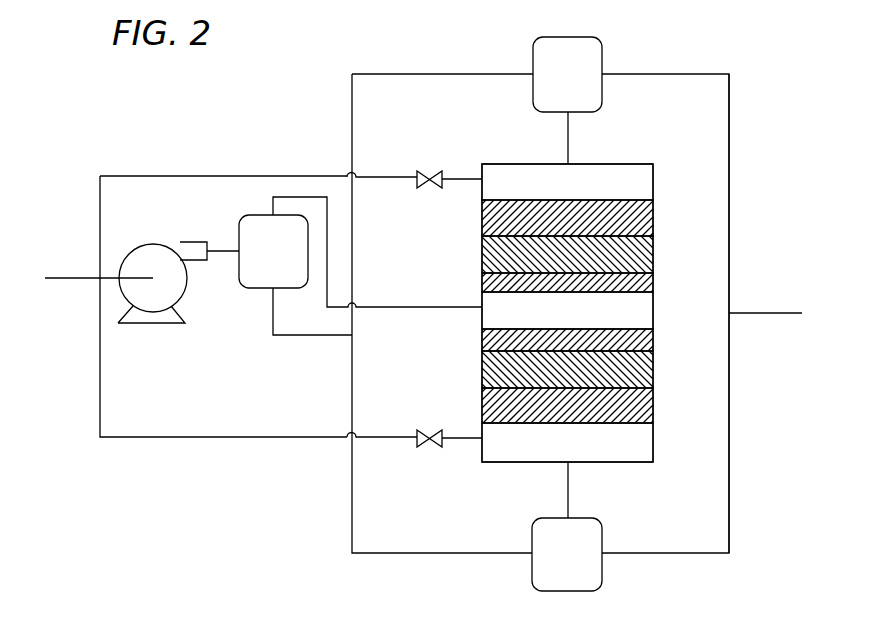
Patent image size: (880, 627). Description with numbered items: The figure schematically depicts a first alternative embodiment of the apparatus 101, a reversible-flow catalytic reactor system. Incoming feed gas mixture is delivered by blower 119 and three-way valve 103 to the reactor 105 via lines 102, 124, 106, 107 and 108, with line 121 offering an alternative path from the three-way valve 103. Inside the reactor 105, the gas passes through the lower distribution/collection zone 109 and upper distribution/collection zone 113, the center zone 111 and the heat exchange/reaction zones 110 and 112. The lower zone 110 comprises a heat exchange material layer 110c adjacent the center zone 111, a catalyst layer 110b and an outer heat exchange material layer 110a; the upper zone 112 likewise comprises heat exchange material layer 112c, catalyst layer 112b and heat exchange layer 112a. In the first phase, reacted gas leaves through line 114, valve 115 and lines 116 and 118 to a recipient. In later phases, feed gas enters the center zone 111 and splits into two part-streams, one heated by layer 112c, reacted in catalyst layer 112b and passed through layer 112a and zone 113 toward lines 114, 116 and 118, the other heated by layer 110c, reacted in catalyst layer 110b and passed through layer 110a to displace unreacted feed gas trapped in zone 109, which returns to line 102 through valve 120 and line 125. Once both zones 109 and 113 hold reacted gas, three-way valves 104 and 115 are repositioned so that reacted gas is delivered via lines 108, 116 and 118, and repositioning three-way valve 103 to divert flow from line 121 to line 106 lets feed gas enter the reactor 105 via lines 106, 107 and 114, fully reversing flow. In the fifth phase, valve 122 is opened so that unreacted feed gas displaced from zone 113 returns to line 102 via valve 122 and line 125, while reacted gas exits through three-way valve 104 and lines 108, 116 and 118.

The gas separation system 101 is at (256, 112).
The line 102 is at (75, 278).
The three-way valve 103 is at (246, 214).
The three-way valve 104 is at (602, 545).
The reactor 105 is at (507, 463).
The line 106 is at (307, 336).
The line 107 is at (352, 138).
The line 108 is at (568, 488).
The distribution/collection zone 109 is at (643, 443).
The heat exchange/reaction zone 110 is at (643, 372).
The heat exchange material layer 110a is at (482, 413).
The catalyst layer 110b is at (482, 372).
The heat exchange material layer 110c is at (482, 340).
The center zone 111 is at (647, 312).
The heat exchange/reaction zone 112 is at (647, 260).
The heat exchange layer 112a is at (482, 215).
The catalyst layer 112b is at (482, 258).
The heat exchange material layer 112c is at (482, 288).
The distribution/collection zone 113 is at (648, 185).
The line 114 is at (568, 138).
The valve 115 is at (602, 70).
The line 116 is at (729, 193).
The line 118 is at (752, 316).
The blower 119 is at (158, 243).
The valve 120 is at (420, 444).
The line 121 is at (302, 197).
The valve 122 is at (437, 172).
The line 124 is at (219, 261).
The line 125 is at (131, 176).